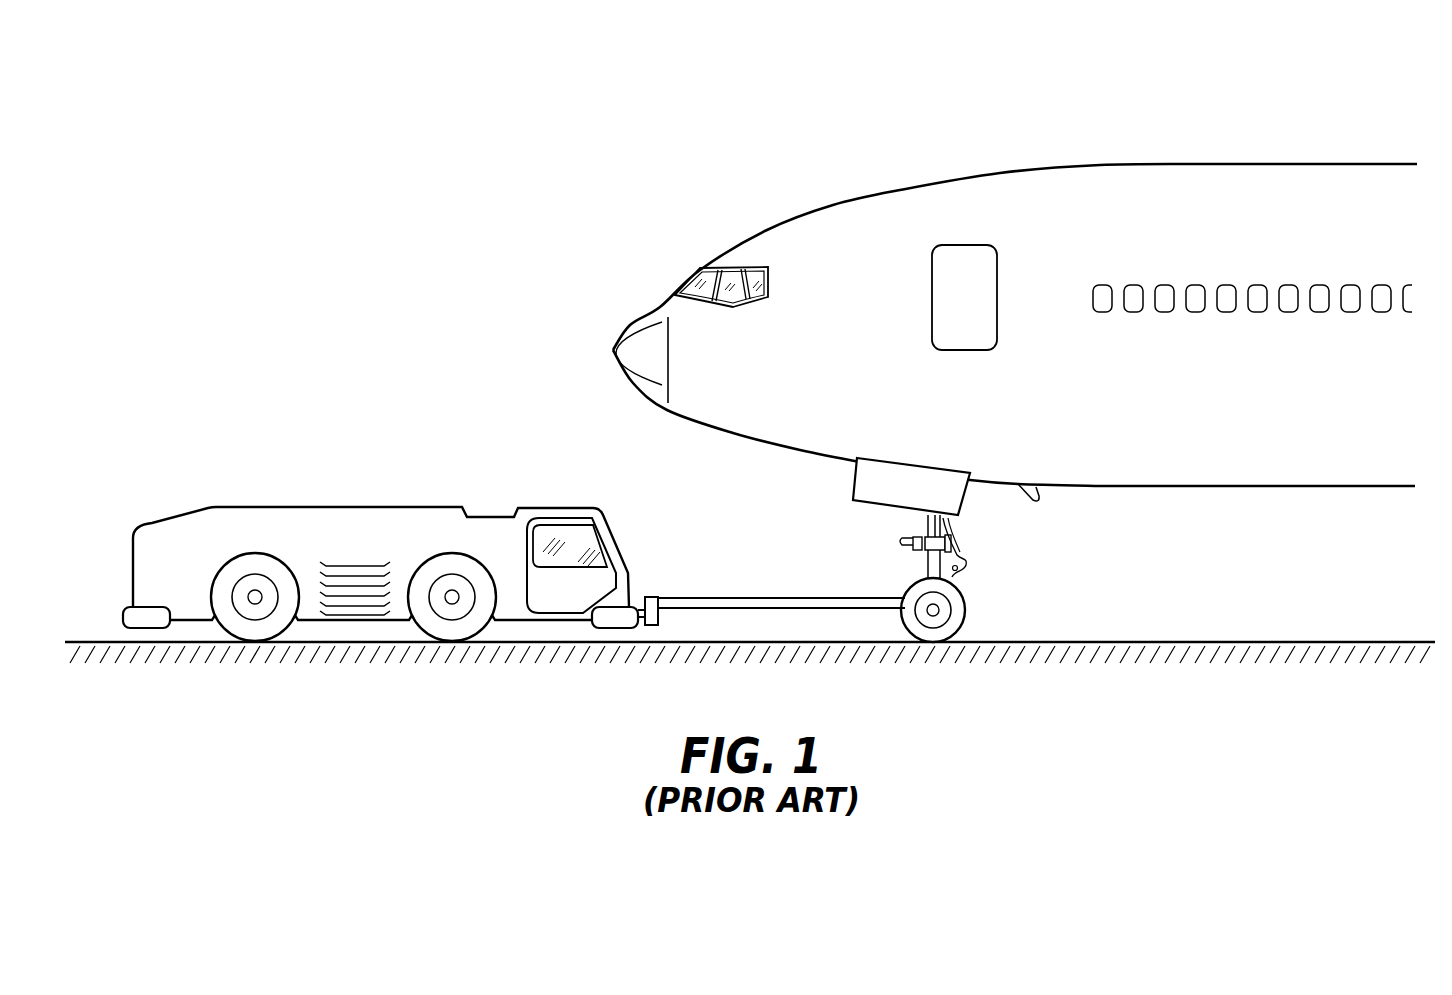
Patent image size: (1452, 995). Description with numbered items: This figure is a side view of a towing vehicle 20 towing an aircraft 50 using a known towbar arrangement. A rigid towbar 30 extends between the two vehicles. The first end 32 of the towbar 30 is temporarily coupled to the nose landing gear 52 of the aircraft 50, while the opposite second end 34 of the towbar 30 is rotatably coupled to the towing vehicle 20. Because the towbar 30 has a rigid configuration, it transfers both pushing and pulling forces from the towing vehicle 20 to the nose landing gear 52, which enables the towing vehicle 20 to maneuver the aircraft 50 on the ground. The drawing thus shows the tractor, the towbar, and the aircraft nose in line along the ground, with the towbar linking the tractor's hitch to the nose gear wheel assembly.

The towing vehicle 20 is at (305, 507).
The towbar 30 is at (782, 598).
The first end 32 is at (898, 597).
The second end 34 is at (660, 596).
The aircraft 50 is at (1203, 158).
The nose landing gear 52 is at (962, 582).